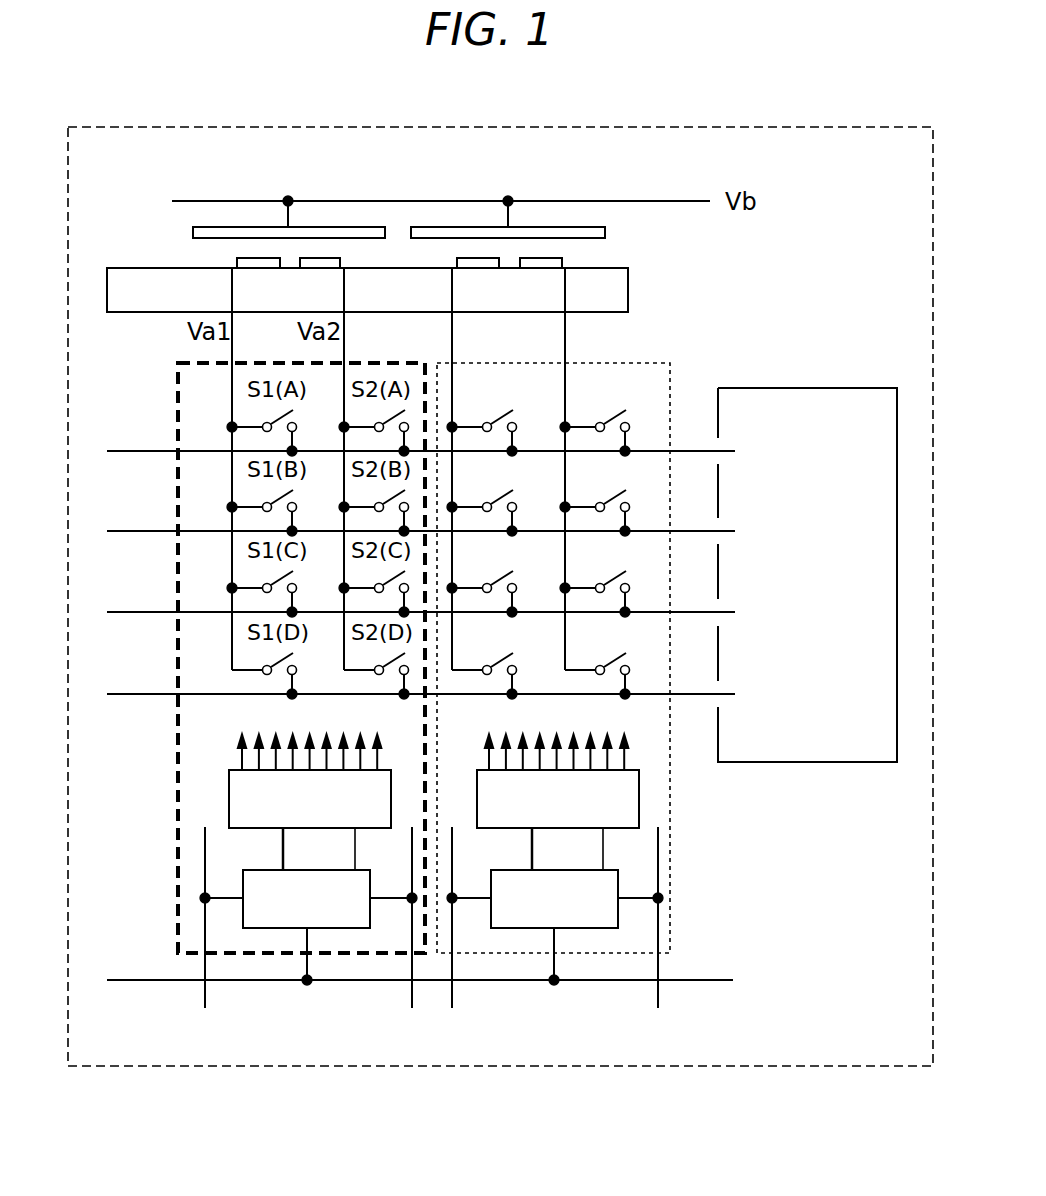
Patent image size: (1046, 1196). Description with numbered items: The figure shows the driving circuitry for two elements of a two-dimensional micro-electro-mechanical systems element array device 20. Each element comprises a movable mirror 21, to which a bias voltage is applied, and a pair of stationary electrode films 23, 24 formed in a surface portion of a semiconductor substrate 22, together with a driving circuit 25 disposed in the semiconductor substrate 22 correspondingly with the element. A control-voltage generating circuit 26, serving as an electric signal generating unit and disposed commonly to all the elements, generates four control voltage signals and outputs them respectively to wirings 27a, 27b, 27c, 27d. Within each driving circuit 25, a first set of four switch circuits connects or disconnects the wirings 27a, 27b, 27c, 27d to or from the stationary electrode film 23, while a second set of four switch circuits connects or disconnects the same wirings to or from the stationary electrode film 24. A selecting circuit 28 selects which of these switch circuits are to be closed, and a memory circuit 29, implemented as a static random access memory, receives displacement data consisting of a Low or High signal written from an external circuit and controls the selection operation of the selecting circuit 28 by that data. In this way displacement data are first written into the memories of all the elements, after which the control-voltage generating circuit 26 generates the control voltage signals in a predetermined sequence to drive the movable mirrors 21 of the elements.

The two-dimensional micro-electro-mechanical systems element array device 20 is at (325, 1066).
The movable mirror 21 is at (246, 227).
The semiconductor substrate 22 is at (628, 292).
The stationary electrode film 23 is at (246, 258).
The stationary electrode film 24 is at (327, 258).
The driving circuit 25 is at (177, 848).
The control-voltage generating circuit 26 is at (787, 388).
The wiring 27a is at (693, 450).
The wiring 27b is at (693, 530).
The wiring 27c is at (693, 611).
The wiring 27d is at (693, 693).
The selecting circuit 28 is at (229, 797).
The memory circuit (SRAM) 29 is at (262, 928).